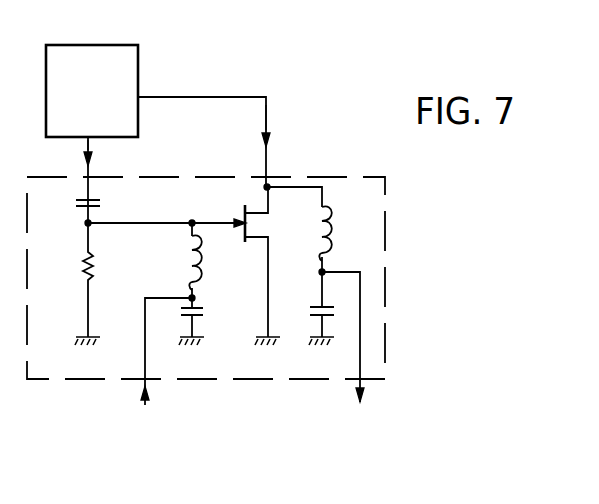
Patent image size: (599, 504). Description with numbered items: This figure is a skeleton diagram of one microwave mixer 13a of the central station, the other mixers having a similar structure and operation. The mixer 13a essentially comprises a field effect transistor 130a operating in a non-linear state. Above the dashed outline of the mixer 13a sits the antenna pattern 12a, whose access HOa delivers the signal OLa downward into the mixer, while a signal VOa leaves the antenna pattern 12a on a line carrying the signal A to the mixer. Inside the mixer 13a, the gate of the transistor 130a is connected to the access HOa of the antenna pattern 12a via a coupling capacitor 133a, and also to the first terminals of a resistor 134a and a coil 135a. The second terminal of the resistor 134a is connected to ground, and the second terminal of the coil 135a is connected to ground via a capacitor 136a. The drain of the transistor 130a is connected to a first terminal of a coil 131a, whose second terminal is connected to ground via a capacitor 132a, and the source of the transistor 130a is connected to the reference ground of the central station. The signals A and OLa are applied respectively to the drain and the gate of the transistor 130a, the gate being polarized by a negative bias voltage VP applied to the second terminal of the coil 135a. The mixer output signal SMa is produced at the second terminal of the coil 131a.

The antenna pattern 12a is at (99, 45).
The oscillator output signal VOa is at (138, 97).
The access HOa is at (80, 143).
The signal OLa is at (91, 150).
The signal A is at (270, 118).
The microwave mixer 13a is at (386, 269).
The coupling capacitor 133a is at (103, 203).
The resistor 134a is at (86, 268).
The coil 135a is at (183, 263).
The capacitor 136a is at (200, 314).
The field effect transistor 130a is at (253, 230).
The coil 131a is at (348, 213).
The capacitor 132a is at (310, 308).
The negative bias voltage VP is at (150, 405).
The signal SMa is at (364, 383).